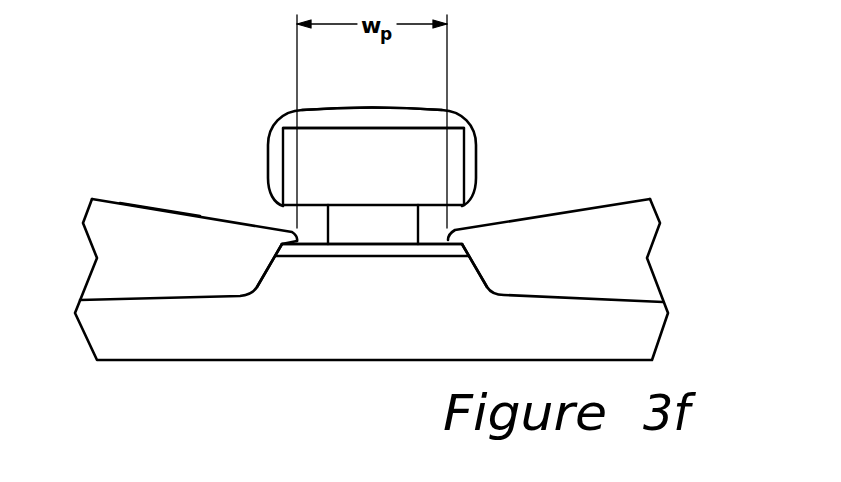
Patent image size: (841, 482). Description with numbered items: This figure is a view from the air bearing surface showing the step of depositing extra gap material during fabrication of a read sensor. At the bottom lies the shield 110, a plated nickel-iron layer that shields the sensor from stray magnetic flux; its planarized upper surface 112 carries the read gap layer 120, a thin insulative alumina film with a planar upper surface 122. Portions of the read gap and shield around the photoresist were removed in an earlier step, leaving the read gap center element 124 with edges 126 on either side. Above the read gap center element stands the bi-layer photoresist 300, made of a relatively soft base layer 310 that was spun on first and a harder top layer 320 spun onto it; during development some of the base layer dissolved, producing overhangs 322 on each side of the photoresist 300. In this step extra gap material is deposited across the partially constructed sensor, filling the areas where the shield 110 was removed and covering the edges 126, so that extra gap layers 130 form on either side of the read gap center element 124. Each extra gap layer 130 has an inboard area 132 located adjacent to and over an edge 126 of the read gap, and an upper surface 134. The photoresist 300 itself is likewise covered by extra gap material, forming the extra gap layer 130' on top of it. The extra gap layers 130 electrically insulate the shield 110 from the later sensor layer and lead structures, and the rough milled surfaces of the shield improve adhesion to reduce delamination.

The shield 110 is at (113, 341).
The upper surface 112 is at (377, 256).
The read gap layer 120 is at (308, 253).
The planar upper surface 122 is at (387, 243).
The read gap center element 124 is at (410, 252).
The edges 126 is at (282, 250).
The extra gap layer 130 is at (375, 226).
The extra gap layer 130' is at (373, 92).
The inboard areas 132 is at (284, 240).
The upper surfaces 134 is at (153, 207).
The photoresist 300 is at (476, 155).
The base layer 310 is at (347, 226).
The top layer 320 is at (314, 141).
The overhangs 322 is at (313, 222).